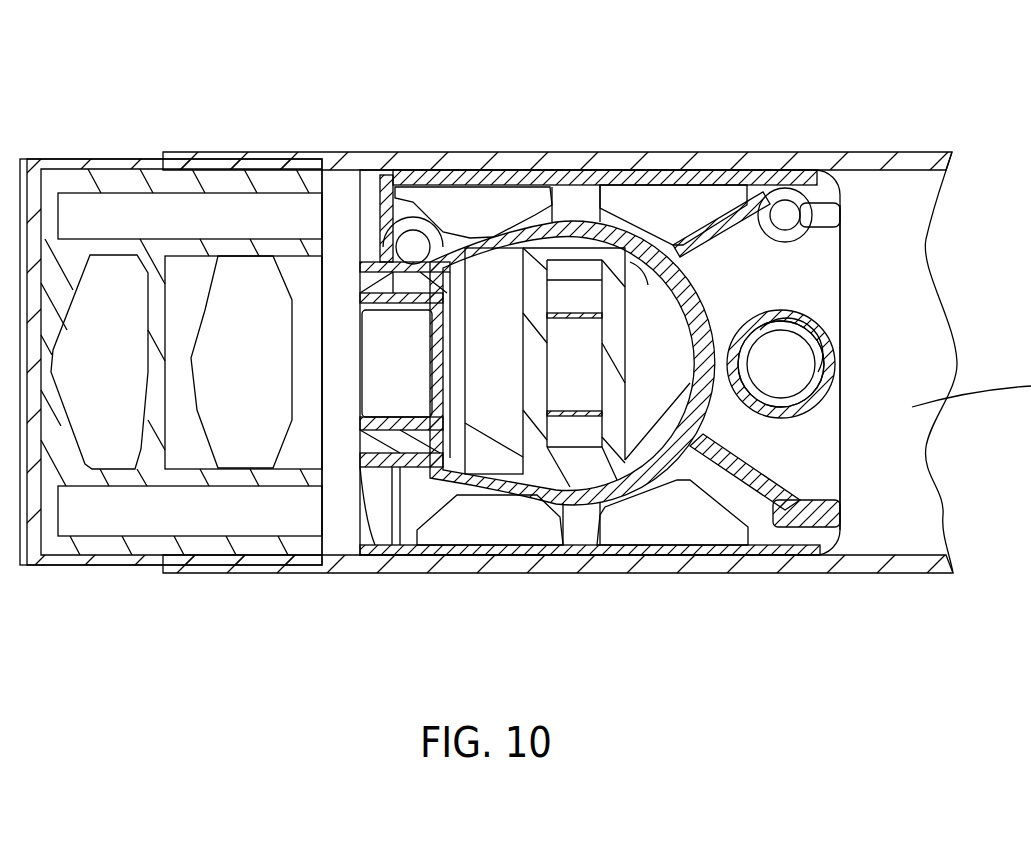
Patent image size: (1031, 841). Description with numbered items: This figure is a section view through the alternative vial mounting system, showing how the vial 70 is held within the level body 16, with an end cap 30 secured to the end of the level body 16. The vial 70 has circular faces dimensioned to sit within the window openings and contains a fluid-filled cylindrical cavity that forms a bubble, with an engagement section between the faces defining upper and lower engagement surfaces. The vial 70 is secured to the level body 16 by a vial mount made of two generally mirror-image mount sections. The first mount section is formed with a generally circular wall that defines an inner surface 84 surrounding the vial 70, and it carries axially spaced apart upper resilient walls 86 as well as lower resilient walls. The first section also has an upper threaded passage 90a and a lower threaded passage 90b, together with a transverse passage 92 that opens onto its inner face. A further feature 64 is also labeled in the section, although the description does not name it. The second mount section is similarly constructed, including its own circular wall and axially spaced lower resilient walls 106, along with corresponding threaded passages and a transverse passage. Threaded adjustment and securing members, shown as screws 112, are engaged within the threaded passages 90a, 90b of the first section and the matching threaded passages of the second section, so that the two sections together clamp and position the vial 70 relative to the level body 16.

The level body 16 is at (920, 145).
The end cap 30 is at (88, 572).
The bearing 64 is at (812, 347).
The vial 70 is at (812, 322).
The inner surface 84 is at (680, 268).
The upper resilient walls 86 is at (460, 183).
The upper threaded passage 90a is at (372, 262).
The lower threaded passage 90b is at (396, 555).
The transverse passage 92 is at (842, 357).
The lower resilient walls 106 is at (482, 555).
The screw 112 is at (385, 300).